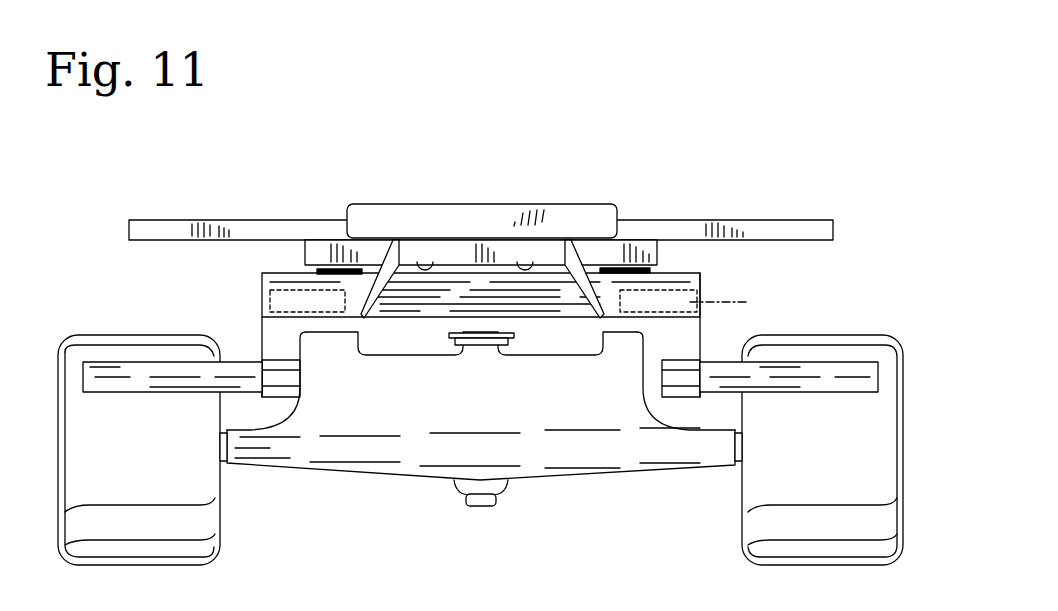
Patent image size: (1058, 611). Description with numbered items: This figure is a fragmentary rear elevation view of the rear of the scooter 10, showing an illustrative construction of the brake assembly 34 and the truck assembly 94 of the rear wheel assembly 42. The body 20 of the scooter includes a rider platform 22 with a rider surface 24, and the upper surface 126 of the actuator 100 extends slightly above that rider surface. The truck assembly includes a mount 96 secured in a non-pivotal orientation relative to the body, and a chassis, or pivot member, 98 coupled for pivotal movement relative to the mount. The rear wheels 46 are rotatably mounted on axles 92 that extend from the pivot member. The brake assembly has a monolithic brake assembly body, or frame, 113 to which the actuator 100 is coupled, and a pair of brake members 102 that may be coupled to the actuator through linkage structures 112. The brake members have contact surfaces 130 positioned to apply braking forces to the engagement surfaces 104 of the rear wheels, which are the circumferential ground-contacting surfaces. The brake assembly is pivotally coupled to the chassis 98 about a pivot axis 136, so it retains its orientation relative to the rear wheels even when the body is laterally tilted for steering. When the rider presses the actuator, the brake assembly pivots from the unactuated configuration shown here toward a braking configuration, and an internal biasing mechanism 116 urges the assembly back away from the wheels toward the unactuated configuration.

The scooter 10 is at (852, 118).
The body 20 is at (792, 190).
The rider platform 22 is at (646, 217).
The rider surface 24 is at (701, 219).
The brake assembly 34 is at (86, 292).
The rear wheel assembly 42 is at (919, 532).
The rear wheels 46 is at (224, 521).
The axles 92 is at (223, 470).
The truck assembly 94 is at (492, 517).
The mount 96 is at (658, 251).
The chassis 98 is at (592, 481).
The actuator 100 is at (554, 200).
The brake members 102 is at (126, 357).
The engagement surfaces 104 is at (165, 480).
The linkage structures 112 is at (283, 348).
The brake assembly body 113 is at (253, 302).
The biasing mechanism 116 is at (329, 338).
The upper surface 126 is at (443, 202).
The contact surfaces 130 is at (165, 396).
The pivot axis 136 is at (740, 299).